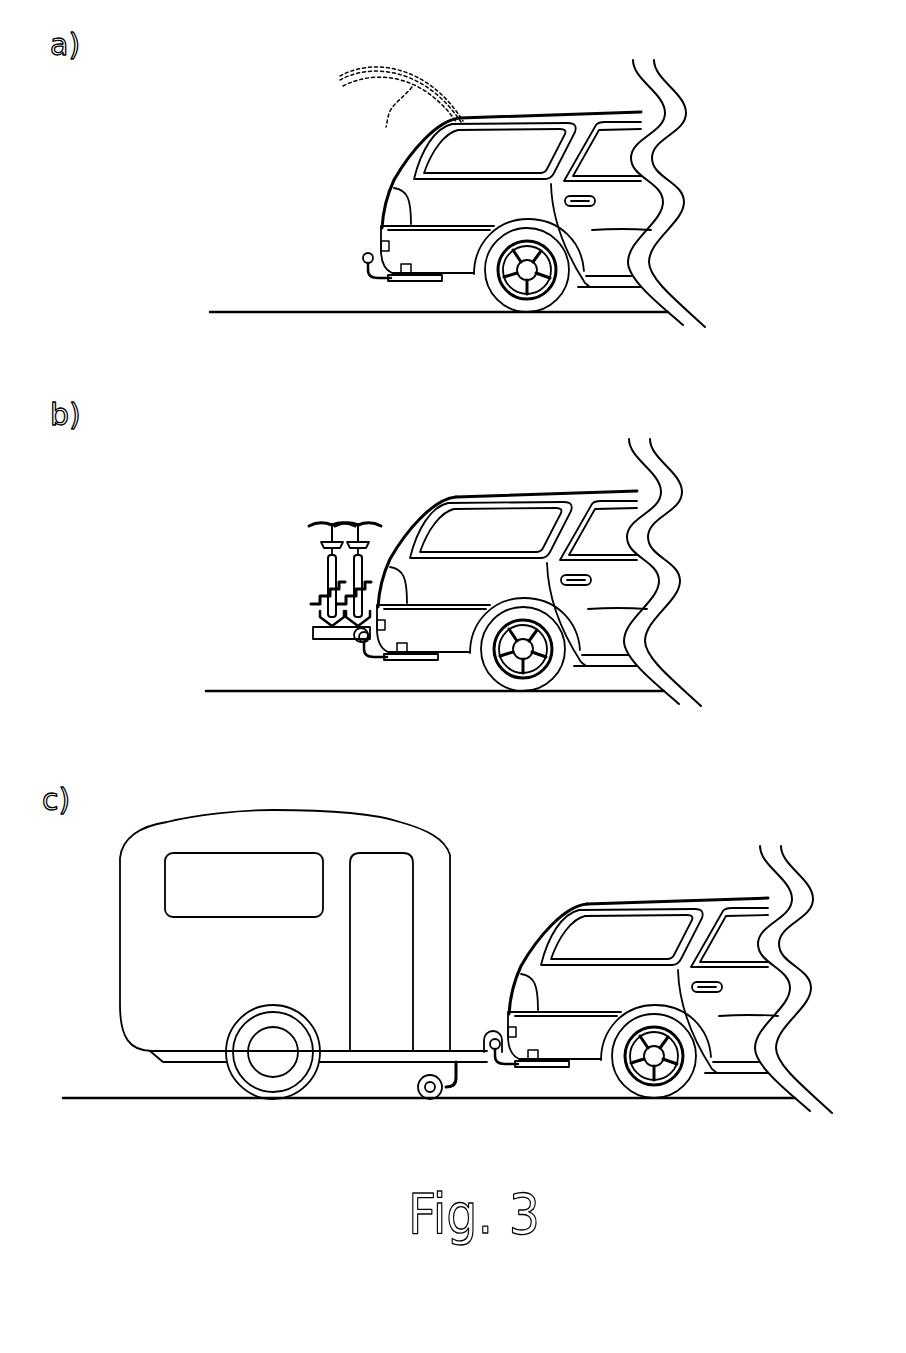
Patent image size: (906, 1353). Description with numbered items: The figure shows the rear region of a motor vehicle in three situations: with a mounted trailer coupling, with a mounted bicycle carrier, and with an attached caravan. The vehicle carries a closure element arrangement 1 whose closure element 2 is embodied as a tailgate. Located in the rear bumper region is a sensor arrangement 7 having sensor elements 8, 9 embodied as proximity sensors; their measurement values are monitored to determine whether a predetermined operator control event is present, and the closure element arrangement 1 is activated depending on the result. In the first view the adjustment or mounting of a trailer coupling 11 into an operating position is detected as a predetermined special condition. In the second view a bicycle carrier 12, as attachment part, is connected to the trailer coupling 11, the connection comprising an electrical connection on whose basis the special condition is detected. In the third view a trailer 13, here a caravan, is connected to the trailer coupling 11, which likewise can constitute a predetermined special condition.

The closure element arrangement 1 is at (460, 78).
The closure element 2 is at (427, 138).
The sensor arrangement 7 is at (424, 245).
The sensor element 8 is at (385, 252).
The sensor element 9 is at (410, 274).
The trailer coupling 11 is at (367, 270).
The bicycle carrier 12 is at (315, 628).
The trailer 13 is at (137, 980).